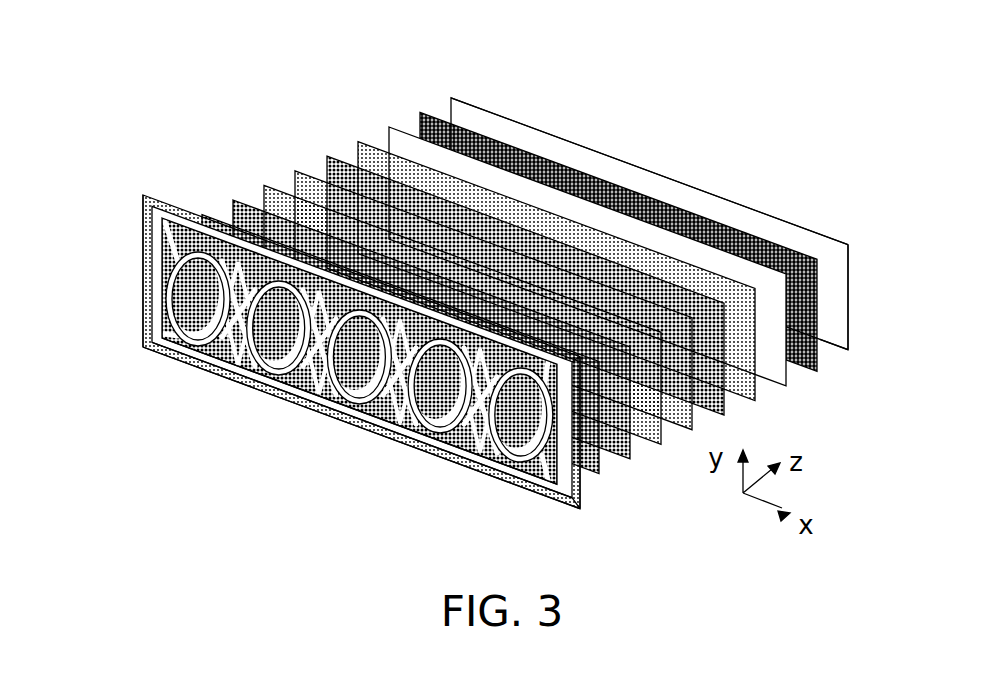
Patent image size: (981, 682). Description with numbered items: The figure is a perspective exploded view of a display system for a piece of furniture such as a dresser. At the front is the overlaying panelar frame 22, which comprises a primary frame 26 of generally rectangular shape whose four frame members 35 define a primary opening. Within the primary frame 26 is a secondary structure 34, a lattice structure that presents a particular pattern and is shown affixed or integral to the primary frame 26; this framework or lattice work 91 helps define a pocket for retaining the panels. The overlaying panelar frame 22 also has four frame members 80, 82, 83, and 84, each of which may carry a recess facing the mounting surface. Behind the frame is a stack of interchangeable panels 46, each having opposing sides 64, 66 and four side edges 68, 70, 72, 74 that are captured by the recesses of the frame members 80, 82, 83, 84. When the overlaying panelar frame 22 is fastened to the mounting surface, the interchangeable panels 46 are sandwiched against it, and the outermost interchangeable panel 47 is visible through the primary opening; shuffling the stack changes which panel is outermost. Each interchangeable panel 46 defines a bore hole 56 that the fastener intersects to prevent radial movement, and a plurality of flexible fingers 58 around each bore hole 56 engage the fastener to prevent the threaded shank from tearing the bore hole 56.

The overlaying panelar frame 22 is at (360, 360).
The primary frame 26 is at (360, 360).
The secondary structure 34 is at (183, 330).
The frame members 35 is at (227, 370).
The interchangeable panel 46 is at (372, 140).
The outermost interchangeable panel 47 is at (594, 470).
The bore hole 56 is at (280, 303).
The flexible fingers 58 is at (518, 390).
The side 64 is at (823, 300).
The side 66 is at (695, 266).
The side edge 68 is at (648, 162).
The side edge 70 is at (849, 262).
The side edge 72 is at (822, 350).
The side edge 74 is at (450, 97).
The frame member 80 is at (583, 513).
The frame member 82 is at (430, 445).
The frame member 83 is at (143, 268).
The frame member 84 is at (196, 212).
The lattice work 91 is at (363, 406).